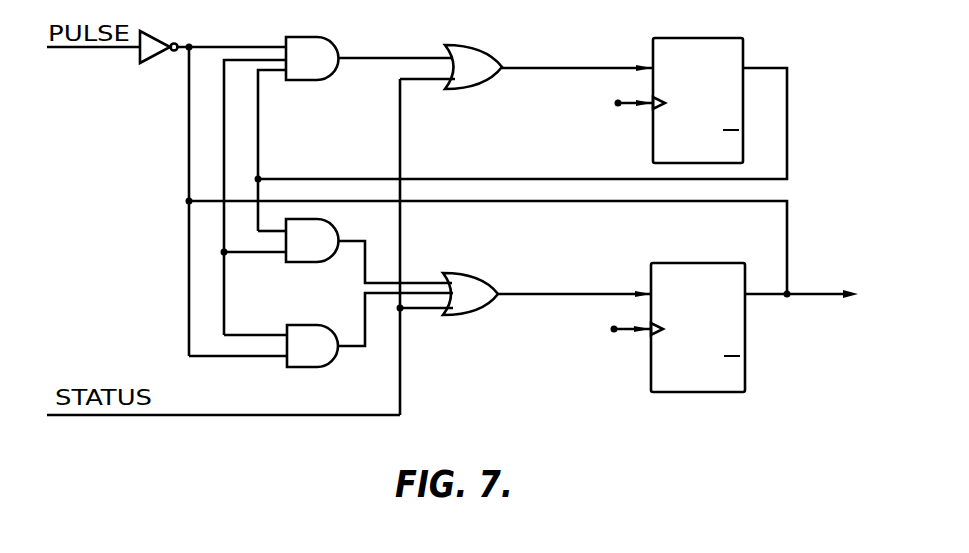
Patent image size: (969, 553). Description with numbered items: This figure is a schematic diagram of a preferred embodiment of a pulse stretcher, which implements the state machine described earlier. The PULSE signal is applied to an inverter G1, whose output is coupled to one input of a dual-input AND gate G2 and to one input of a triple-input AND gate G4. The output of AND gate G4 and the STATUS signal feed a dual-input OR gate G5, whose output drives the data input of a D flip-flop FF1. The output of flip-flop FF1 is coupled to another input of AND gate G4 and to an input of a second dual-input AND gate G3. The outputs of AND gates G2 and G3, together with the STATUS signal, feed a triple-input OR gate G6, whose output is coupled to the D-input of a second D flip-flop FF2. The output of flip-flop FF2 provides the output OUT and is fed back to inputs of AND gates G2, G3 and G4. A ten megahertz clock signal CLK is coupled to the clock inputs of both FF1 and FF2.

The inverter G1 is at (157, 30).
The dual-input AND gate G2 is at (296, 324).
The dual-input AND gate G3 is at (305, 263).
The triple-input AND gate G4 is at (331, 37).
The dual-input OR gate G5 is at (476, 44).
The triple-input OR gate G6 is at (473, 273).
The D flip-flop FF1 is at (730, 37).
The D flip-flop FF2 is at (723, 263).